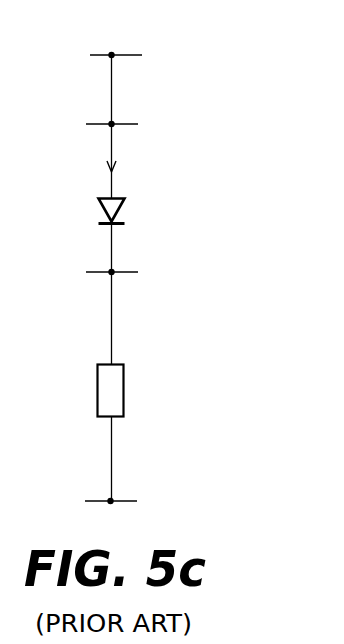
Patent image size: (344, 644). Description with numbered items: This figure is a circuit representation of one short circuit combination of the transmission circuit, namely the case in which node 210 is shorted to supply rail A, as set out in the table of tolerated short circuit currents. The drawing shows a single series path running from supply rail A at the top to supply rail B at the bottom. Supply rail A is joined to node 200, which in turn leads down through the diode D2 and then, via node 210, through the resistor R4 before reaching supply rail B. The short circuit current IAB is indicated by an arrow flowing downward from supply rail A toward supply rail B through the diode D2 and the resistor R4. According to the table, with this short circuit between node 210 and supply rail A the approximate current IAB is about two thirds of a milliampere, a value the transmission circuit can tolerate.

The supply rail A is at (111, 54).
The node 200 is at (112, 124).
The short circuit current IAB is at (131, 166).
The diode D2 is at (103, 209).
The node 210 is at (112, 272).
The resistor R4 is at (125, 397).
The supply rail B is at (110, 503).